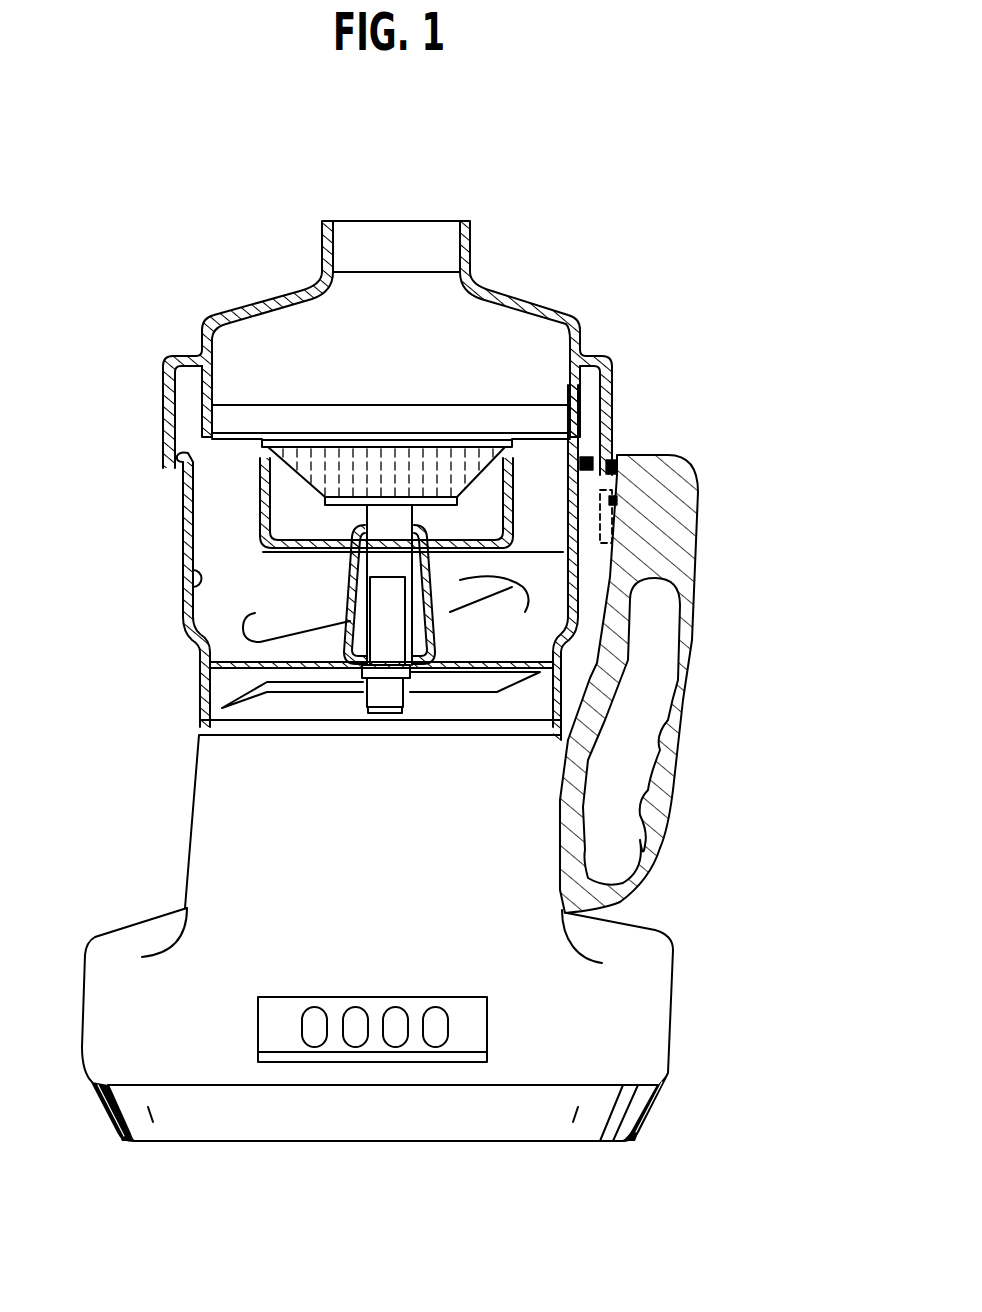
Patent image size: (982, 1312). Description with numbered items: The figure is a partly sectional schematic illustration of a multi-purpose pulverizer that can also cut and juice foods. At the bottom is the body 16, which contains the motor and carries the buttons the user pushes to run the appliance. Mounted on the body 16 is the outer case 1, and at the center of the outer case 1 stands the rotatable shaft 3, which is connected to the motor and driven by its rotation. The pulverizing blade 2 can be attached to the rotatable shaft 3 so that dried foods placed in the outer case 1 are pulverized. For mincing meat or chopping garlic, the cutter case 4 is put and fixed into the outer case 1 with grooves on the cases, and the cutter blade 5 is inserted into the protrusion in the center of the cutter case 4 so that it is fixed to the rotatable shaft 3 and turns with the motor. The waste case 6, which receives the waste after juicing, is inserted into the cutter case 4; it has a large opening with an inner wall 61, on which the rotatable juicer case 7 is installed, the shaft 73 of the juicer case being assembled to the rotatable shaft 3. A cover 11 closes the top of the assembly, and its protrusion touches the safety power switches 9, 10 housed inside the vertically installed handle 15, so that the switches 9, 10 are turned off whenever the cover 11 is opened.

The outer case 1 is at (199, 677).
The pulverizing blade 2 is at (320, 688).
The rotatable shaft 3 is at (393, 697).
The cutter case 4 is at (183, 572).
The cutter blade 5 is at (473, 593).
The waste case 6 is at (572, 420).
The rotatable juicer case 7 is at (413, 470).
The safety power switch 9 is at (617, 458).
The safety power switch 10 is at (618, 500).
The cover 11 is at (250, 302).
The handle 15 is at (673, 700).
The body 16 is at (382, 1063).
The inner wall 61 is at (517, 492).
The shaft 73 is at (397, 520).